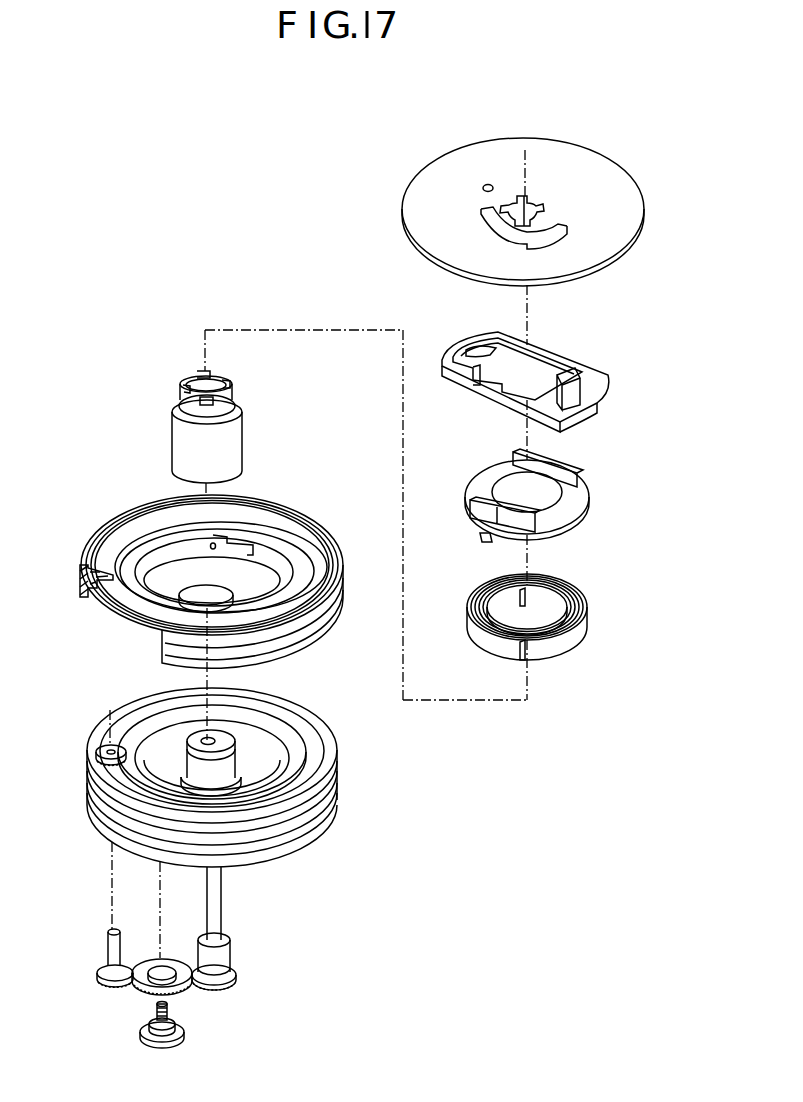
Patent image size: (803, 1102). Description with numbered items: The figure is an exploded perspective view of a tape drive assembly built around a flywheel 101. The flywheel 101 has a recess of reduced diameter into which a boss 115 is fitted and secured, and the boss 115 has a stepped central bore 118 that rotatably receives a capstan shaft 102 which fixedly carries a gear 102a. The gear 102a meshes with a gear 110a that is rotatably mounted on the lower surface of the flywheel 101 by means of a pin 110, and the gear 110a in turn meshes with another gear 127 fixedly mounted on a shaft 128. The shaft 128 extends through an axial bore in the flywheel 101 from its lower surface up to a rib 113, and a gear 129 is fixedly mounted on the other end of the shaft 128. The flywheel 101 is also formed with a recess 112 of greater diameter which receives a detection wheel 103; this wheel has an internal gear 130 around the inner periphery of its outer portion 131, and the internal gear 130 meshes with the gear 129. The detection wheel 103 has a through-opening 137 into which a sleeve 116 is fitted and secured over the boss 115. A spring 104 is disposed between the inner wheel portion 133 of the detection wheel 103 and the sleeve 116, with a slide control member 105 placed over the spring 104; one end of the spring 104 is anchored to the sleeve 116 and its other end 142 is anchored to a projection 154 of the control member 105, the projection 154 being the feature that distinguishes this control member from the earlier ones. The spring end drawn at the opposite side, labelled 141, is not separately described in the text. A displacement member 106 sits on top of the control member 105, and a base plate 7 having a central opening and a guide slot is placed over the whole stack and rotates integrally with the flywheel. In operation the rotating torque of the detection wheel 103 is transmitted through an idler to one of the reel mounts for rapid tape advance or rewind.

The base plate 7 is at (632, 161).
The displacement member 106 is at (597, 362).
The slide control member 105 is at (535, 511).
The projection 154 is at (484, 542).
The spring 104 is at (544, 631).
The spring tab 141 is at (518, 596).
The other end of spring 142 is at (534, 652).
The sleeve 116 is at (172, 446).
The detection wheel 103 is at (223, 574).
The outer portion 131 is at (330, 547).
The internal gear 130 is at (92, 596).
The inner wheel portion 133 is at (253, 608).
The through-opening 137 is at (222, 605).
The stepped central bore 118 is at (205, 740).
The recess 112 is at (265, 737).
The rib 113 is at (298, 724).
The flywheel 101 is at (211, 765).
The gear 129 is at (97, 760).
The boss 115 is at (190, 756).
The shaft 128 is at (108, 947).
The gear 110a is at (176, 958).
The capstan shaft 102 is at (221, 906).
The gear 127 is at (97, 975).
The gear 102a is at (236, 975).
The pin 110 is at (184, 1030).